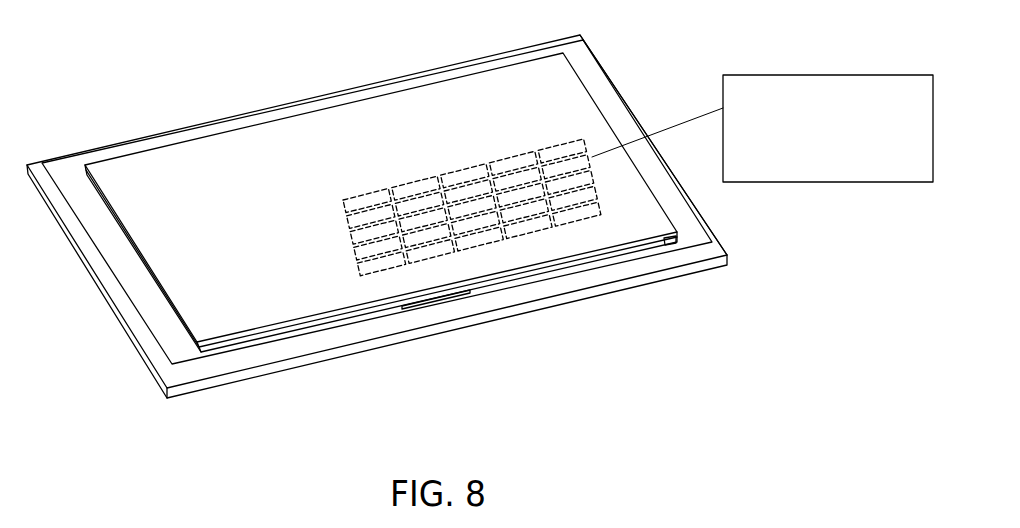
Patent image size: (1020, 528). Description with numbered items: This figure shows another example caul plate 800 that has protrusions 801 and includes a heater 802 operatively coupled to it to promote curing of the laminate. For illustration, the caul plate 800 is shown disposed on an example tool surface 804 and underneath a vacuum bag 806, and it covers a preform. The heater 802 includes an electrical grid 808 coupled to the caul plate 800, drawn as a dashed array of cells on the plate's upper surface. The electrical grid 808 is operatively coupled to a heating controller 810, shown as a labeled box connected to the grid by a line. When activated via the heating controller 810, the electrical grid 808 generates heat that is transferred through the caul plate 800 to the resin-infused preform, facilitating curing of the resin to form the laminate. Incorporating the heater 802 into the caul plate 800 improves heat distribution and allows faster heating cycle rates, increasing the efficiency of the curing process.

The caul plate 800 is at (318, 97).
The protrusions 801 is at (468, 291).
The heater 802 is at (705, 180).
The tool surface 804 is at (153, 370).
The vacuum bag 806 is at (582, 52).
The electrical grid 808 is at (538, 158).
The heating controller 810 is at (762, 128).